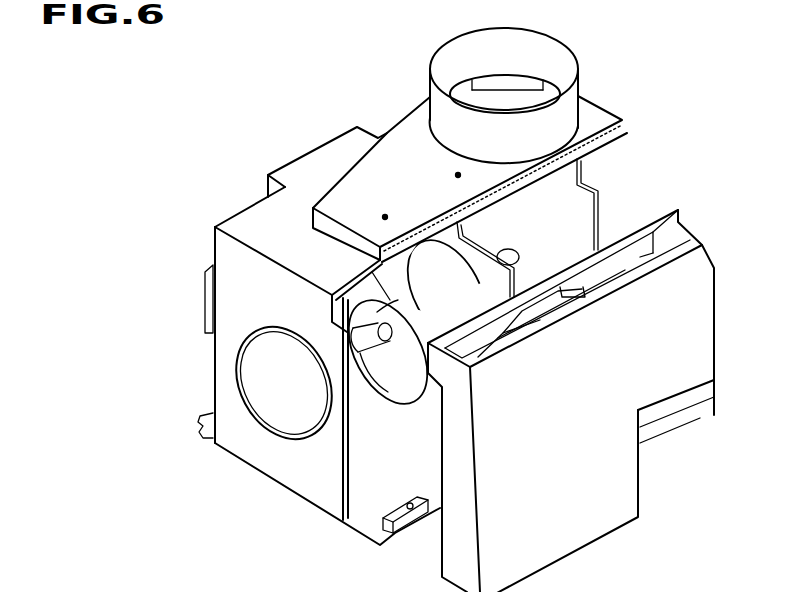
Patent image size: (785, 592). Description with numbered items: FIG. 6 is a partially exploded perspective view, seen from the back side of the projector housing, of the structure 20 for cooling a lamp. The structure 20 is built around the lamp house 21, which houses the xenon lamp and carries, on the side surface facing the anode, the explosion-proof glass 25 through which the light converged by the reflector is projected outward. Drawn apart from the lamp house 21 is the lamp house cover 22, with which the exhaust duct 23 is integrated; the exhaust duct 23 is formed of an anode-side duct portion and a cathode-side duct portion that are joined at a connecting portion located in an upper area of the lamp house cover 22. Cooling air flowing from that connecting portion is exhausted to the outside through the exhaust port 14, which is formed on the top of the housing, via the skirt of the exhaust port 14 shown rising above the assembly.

The structure for cooling a lamp 20 is at (322, 99).
The exhaust port 14 is at (580, 88).
The lamp house 21 is at (285, 478).
The lamp house cover 22 is at (625, 453).
The exhaust duct 23 is at (617, 247).
The explosion-proof glass 25 is at (245, 362).